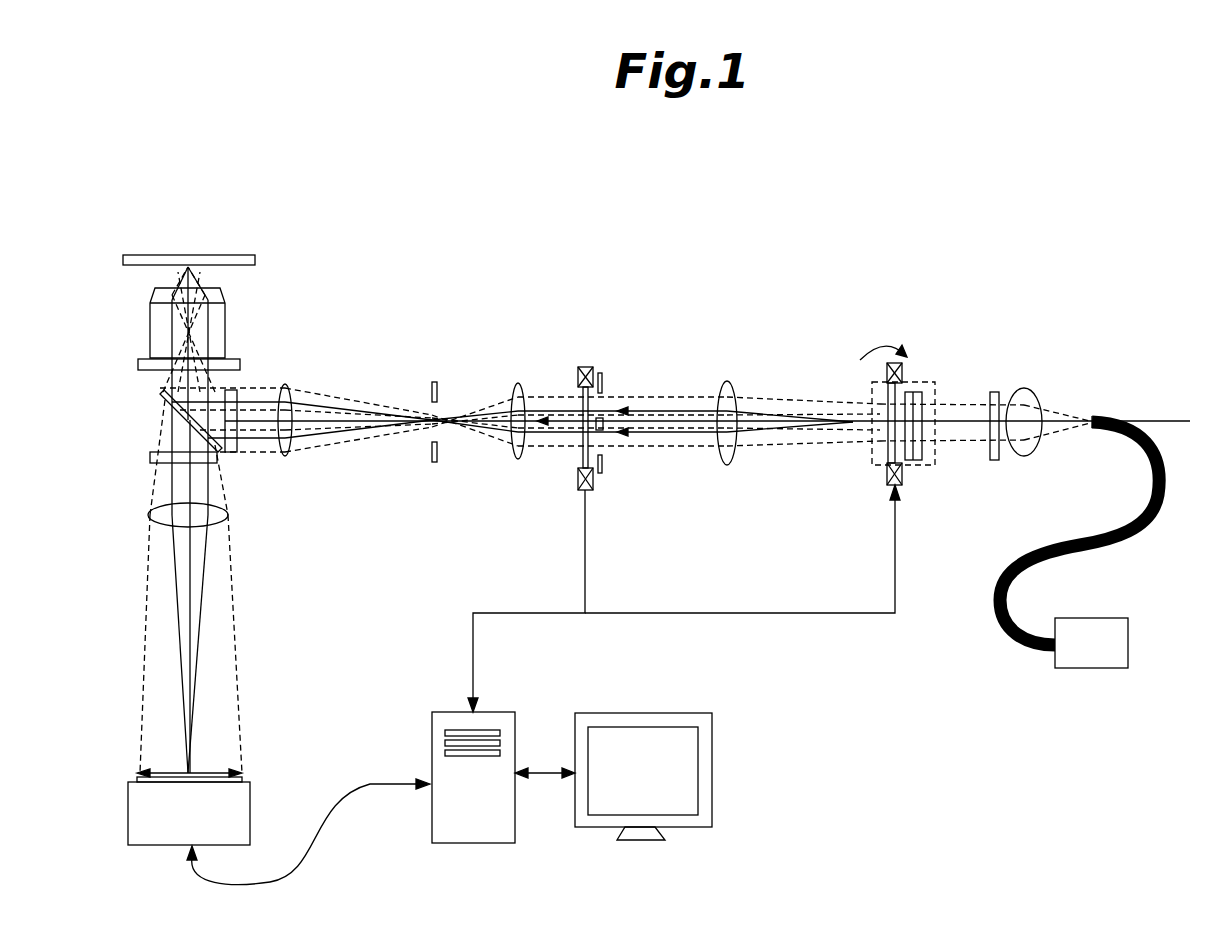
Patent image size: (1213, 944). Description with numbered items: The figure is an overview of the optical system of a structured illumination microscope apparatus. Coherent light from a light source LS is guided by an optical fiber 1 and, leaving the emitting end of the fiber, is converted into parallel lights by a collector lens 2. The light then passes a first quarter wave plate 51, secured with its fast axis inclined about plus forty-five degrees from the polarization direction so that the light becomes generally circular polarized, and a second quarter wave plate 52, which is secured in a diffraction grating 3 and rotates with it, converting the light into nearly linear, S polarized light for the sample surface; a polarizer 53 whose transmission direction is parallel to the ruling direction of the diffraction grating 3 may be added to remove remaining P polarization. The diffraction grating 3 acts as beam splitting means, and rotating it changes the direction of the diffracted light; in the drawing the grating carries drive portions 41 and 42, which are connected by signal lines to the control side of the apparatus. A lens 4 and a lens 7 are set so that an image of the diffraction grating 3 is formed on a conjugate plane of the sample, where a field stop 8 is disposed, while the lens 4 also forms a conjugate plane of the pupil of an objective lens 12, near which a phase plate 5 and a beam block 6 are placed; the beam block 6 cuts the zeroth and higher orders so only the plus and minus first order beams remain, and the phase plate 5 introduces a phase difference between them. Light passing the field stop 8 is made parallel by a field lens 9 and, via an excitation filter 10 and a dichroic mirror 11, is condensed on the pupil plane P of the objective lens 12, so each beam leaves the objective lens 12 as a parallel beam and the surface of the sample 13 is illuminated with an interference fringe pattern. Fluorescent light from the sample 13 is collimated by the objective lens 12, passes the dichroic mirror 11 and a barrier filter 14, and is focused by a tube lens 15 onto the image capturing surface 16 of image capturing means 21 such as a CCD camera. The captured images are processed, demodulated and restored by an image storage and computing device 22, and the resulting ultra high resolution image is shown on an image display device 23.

The optical fiber 1 is at (1100, 414).
The collector lens 2 is at (1026, 388).
The diffraction grating 3 is at (880, 392).
The lens 4 is at (730, 386).
The phase plate 5 is at (582, 412).
The beam block 6 is at (603, 382).
The lens 7 is at (518, 384).
The field stop 8 is at (436, 382).
The field lens 9 is at (290, 388).
The excitation filter 10 is at (238, 392).
The dichroic mirror 11 is at (160, 397).
The objective lens 12 is at (226, 318).
The sample 13 is at (212, 256).
The barrier filter 14 is at (150, 458).
The tube lens 15 is at (148, 516).
The image capturing surface 16 is at (140, 770).
The image capturing means 21 is at (128, 816).
The image storage and computing device 22 is at (510, 712).
The image display device 23 is at (620, 713).
The motor 41 is at (886, 478).
The motor 42 is at (593, 482).
The quarter wave plate 51 is at (994, 460).
The quarter wave plate 52 is at (920, 392).
The polarizer 53 is at (912, 462).
The pupil plane P is at (220, 346).
The light source LS is at (1091, 643).